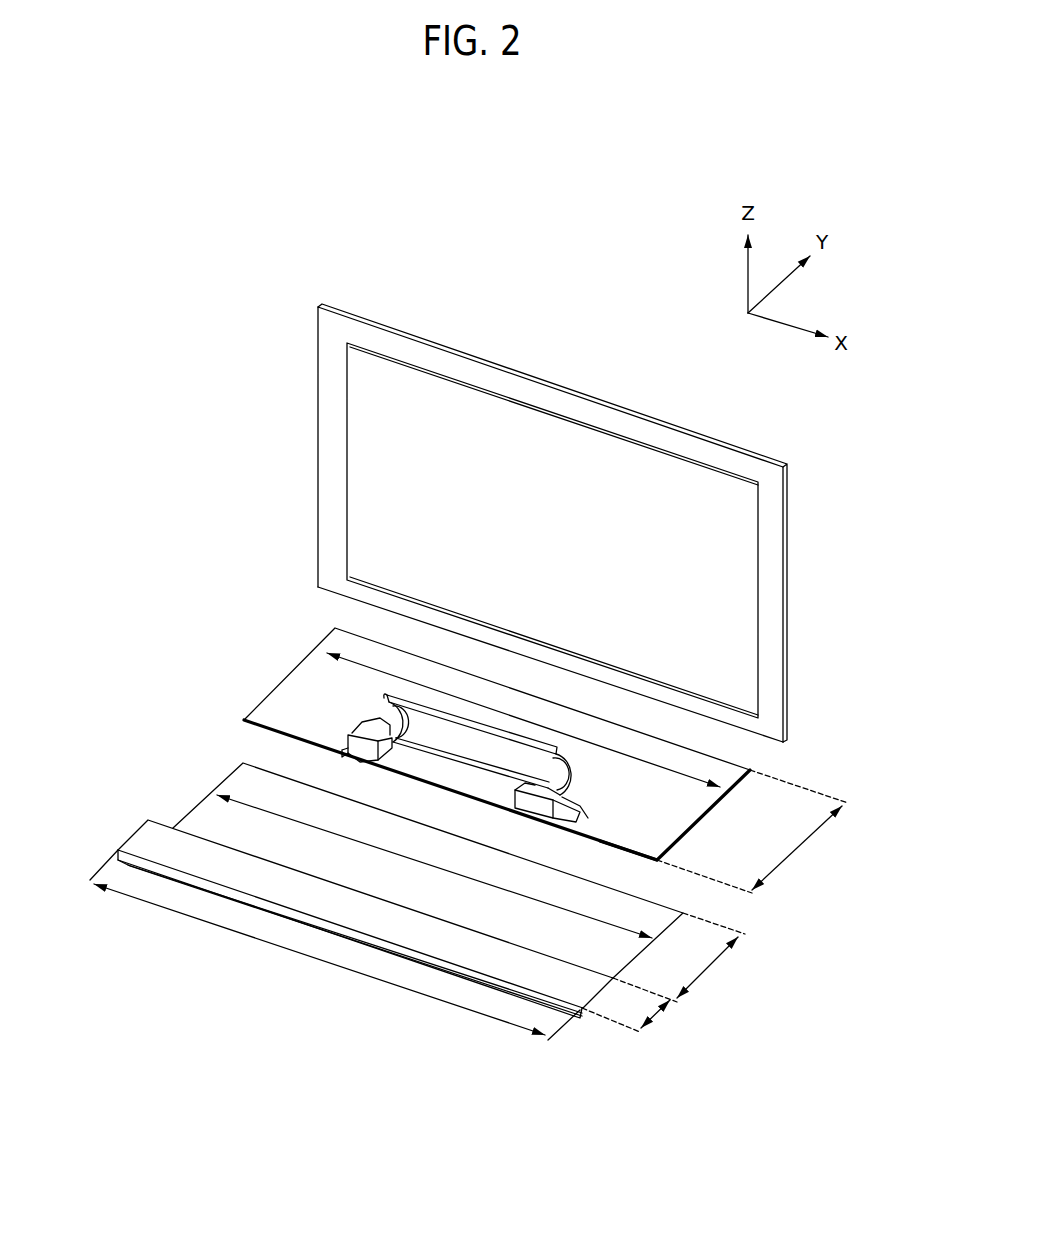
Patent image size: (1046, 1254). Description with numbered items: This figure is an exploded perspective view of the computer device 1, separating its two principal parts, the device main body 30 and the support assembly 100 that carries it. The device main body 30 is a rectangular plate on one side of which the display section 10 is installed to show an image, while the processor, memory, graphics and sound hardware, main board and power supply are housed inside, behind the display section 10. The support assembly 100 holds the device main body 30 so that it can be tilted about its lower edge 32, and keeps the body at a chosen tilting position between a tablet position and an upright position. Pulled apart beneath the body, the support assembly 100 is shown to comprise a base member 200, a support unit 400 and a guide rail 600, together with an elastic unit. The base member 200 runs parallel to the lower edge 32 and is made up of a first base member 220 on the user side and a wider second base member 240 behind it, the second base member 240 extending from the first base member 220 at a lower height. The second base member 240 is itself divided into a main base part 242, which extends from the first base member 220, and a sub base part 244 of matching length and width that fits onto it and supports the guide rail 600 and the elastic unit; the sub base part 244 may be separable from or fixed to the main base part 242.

The computer device 1 is at (604, 327).
The display section 10 is at (440, 397).
The device main body 30 is at (318, 408).
The lower edge 32 is at (773, 733).
The support assembly 100 is at (220, 722).
The base member 200 is at (322, 1049).
The first base member 220 is at (403, 935).
The second base member 240 is at (388, 1027).
The main base part 242 is at (476, 903).
The sub base part 244 is at (637, 843).
The support unit 400 is at (390, 700).
The guide rail 600 is at (565, 795).